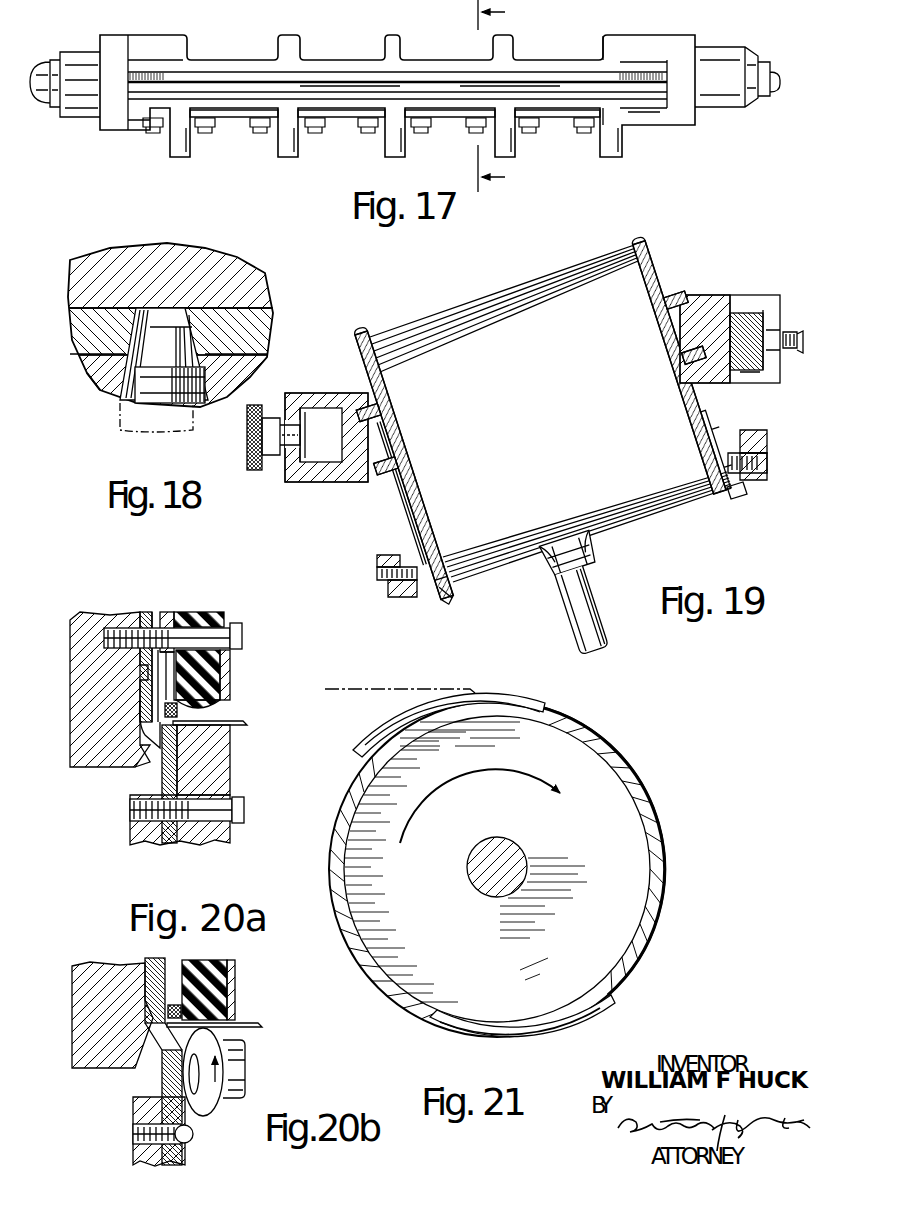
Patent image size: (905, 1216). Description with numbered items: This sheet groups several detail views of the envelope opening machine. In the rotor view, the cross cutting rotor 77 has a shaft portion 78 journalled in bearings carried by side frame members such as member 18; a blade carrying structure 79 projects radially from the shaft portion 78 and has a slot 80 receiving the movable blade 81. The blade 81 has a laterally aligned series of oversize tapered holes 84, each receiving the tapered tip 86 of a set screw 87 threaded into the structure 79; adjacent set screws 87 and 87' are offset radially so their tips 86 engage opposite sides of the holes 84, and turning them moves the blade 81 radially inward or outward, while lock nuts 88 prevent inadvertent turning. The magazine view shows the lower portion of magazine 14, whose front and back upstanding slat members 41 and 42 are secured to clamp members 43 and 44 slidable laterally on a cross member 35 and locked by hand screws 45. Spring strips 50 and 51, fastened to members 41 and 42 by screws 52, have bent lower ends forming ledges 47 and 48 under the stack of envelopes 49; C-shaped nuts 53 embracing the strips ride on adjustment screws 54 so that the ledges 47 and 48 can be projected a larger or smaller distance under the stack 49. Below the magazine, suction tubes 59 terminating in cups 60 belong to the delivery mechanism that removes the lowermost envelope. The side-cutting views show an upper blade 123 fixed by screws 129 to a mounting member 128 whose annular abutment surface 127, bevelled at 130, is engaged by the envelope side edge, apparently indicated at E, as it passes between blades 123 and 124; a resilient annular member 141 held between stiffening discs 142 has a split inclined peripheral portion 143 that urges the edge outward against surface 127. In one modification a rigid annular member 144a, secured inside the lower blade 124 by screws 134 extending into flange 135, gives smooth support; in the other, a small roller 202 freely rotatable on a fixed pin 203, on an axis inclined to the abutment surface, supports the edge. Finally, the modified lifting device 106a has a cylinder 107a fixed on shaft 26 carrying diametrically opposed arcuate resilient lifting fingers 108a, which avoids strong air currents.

In FIG. 19, the magazine 14 is at (690, 234).
In FIG. 17, the side frame member 18 is at (476, 96).
In FIG. 21, the shaft 26 is at (510, 855).
In FIG. 19, the cross member 35 is at (750, 357).
In FIG. 19, the upstanding slat member 41 is at (366, 372).
In FIG. 19, the upstanding slat member 42 is at (657, 247).
In FIG. 19, the clamp member 43 is at (290, 482).
In FIG. 19, the clamp member 44 is at (740, 295).
In FIG. 19, the hand screw 45 is at (253, 471).
In FIG. 19, the ledge 47 is at (440, 596).
In FIG. 19, the ledge 48 is at (724, 500).
In FIG. 19, the stack of envelopes 49 is at (524, 266).
In FIG. 19, the spring strip 50 is at (404, 536).
In FIG. 19, the spring strip 51 is at (722, 428).
In FIG. 19, the screw 52 is at (690, 305).
In FIG. 19, the C-shaped nut 53 is at (755, 470).
In FIG. 19, the adjustment screw 54 is at (769, 456).
In FIG. 19, the suction tube 59 is at (577, 612).
In FIG. 19, the cup 60 is at (597, 553).
In FIG. 17, the rotor 77 is at (668, 34).
In FIG. 17, the shaft portion 78 is at (712, 45).
In FIG. 17, the blade carrying structure 79 is at (390, 58).
In FIG. 18, the blade carrying structure 79 is at (80, 268).
In FIG. 17, the slot 80 is at (330, 82).
In FIG. 18, the slot 80 is at (85, 300).
In FIG. 17, the movable blade 81 is at (200, 72).
In FIG. 18, the movable blade 81 is at (85, 328).
In FIG. 18, the tapered hole 84 is at (85, 355).
In FIG. 18, the tapered tip 86 is at (100, 398).
In FIG. 17, the set screw 87 is at (368, 149).
In FIG. 18, the set screw 87 is at (144, 405).
In FIG. 18, the set screw 87' is at (138, 440).
In FIG. 17, the lock nut 88 is at (142, 124).
In FIG. 21, the modified lifting device 106a is at (672, 848).
In FIG. 21, the cylinder 107a is at (640, 800).
In FIG. 21, the arcuate resilient lifting finger 108a is at (378, 730).
In FIG. 20A, the upper blade 123 is at (148, 692).
In FIG. 20B, the upper blade 123 is at (150, 960).
In FIG. 20A, the lower cutting blade 124 is at (168, 845).
In FIG. 20B, the lower cutting blade 124 is at (164, 1070).
In FIG. 20A, the abutment surface 127 is at (148, 742).
In FIG. 20A, the mounting member 128 is at (80, 708).
In FIG. 20B, the mounting member 128 is at (80, 1013).
In FIG. 20A, the screw 129 is at (237, 632).
In FIG. 20A, the bevelled outer periphery 130 is at (147, 768).
In FIG. 20A, the screw 134 is at (245, 812).
In FIG. 20A, the flange 135 is at (146, 841).
In FIG. 20B, the flange 135 is at (133, 1150).
In FIG. 20A, the resilient annular member 141 is at (196, 612).
In FIG. 20A, the stiffening disc 142 is at (165, 611).
In FIG. 20A, the circumferentially split peripheral portion 143 is at (180, 708).
In FIG. 20B, the circumferentially split peripheral portion 143 is at (185, 1010).
In FIG. 20A, the rigid annular member 144a is at (212, 760).
In FIG. 20B, the roller 202 is at (225, 1036).
In FIG. 20B, the fixed pin 203 is at (246, 1070).
In FIG. 20A, the sheet edge E is at (252, 725).
In FIG. 20B, the sheet edge E is at (256, 1025).